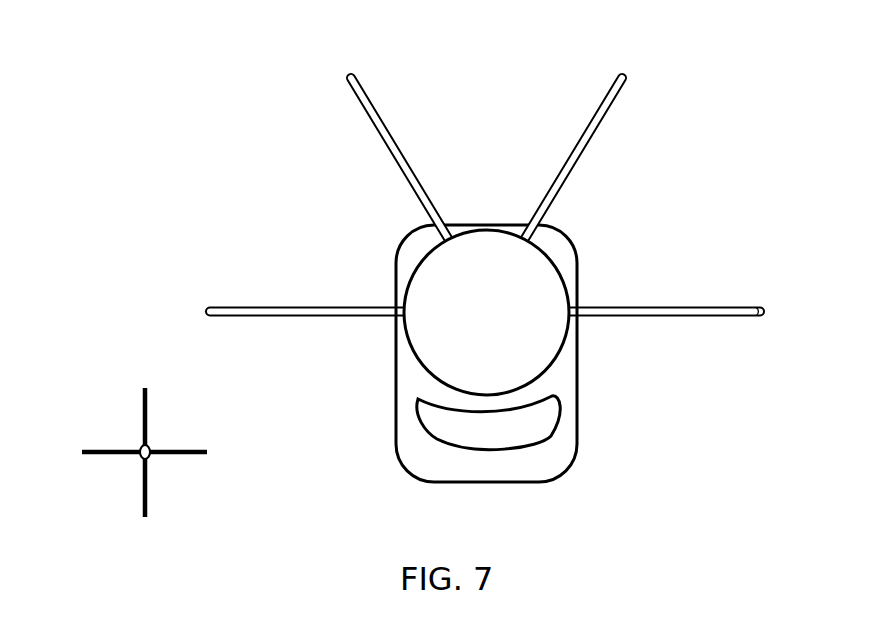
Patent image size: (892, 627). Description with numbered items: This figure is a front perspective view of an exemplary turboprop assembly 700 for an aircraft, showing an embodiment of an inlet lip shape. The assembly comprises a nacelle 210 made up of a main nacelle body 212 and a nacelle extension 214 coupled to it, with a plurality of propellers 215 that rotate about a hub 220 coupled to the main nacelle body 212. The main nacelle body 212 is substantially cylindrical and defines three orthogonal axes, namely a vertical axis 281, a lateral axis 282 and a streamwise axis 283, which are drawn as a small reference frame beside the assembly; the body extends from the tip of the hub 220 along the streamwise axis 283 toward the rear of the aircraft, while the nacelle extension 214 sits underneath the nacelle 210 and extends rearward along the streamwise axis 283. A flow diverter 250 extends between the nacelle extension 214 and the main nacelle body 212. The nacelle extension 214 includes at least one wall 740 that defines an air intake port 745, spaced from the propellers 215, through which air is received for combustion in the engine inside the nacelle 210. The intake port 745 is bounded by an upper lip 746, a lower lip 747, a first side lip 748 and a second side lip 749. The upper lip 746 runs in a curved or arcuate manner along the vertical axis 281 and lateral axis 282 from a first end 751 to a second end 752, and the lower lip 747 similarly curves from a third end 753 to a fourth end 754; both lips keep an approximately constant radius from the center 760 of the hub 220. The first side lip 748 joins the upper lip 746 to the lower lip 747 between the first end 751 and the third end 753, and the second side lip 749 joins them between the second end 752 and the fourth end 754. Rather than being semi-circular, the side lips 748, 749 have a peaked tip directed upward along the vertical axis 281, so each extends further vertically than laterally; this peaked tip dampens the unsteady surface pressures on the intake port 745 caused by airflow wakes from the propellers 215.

The turboprop assembly 700 is at (485, 277).
The nacelle 210 is at (472, 280).
The main nacelle body 212 is at (622, 270).
The propellers 215 is at (710, 318).
The hub 220 is at (445, 298).
The center 760 is at (482, 315).
The nacelle extension 214 is at (462, 438).
The flow diverter 250 is at (453, 392).
The wall 740 is at (551, 436).
The air intake port 745 is at (540, 467).
The upper lip 746 is at (455, 442).
The lower lip 747 is at (467, 411).
The first side lip 748 is at (422, 432).
The second side lip 749 is at (562, 410).
The first end 751 is at (420, 398).
The second end 752 is at (557, 396).
The third end 753 is at (427, 436).
The fourth end 754 is at (550, 443).
The vertical axis 281 is at (147, 415).
The lateral axis 282 is at (200, 449).
The streamwise axis 283 is at (140, 456).